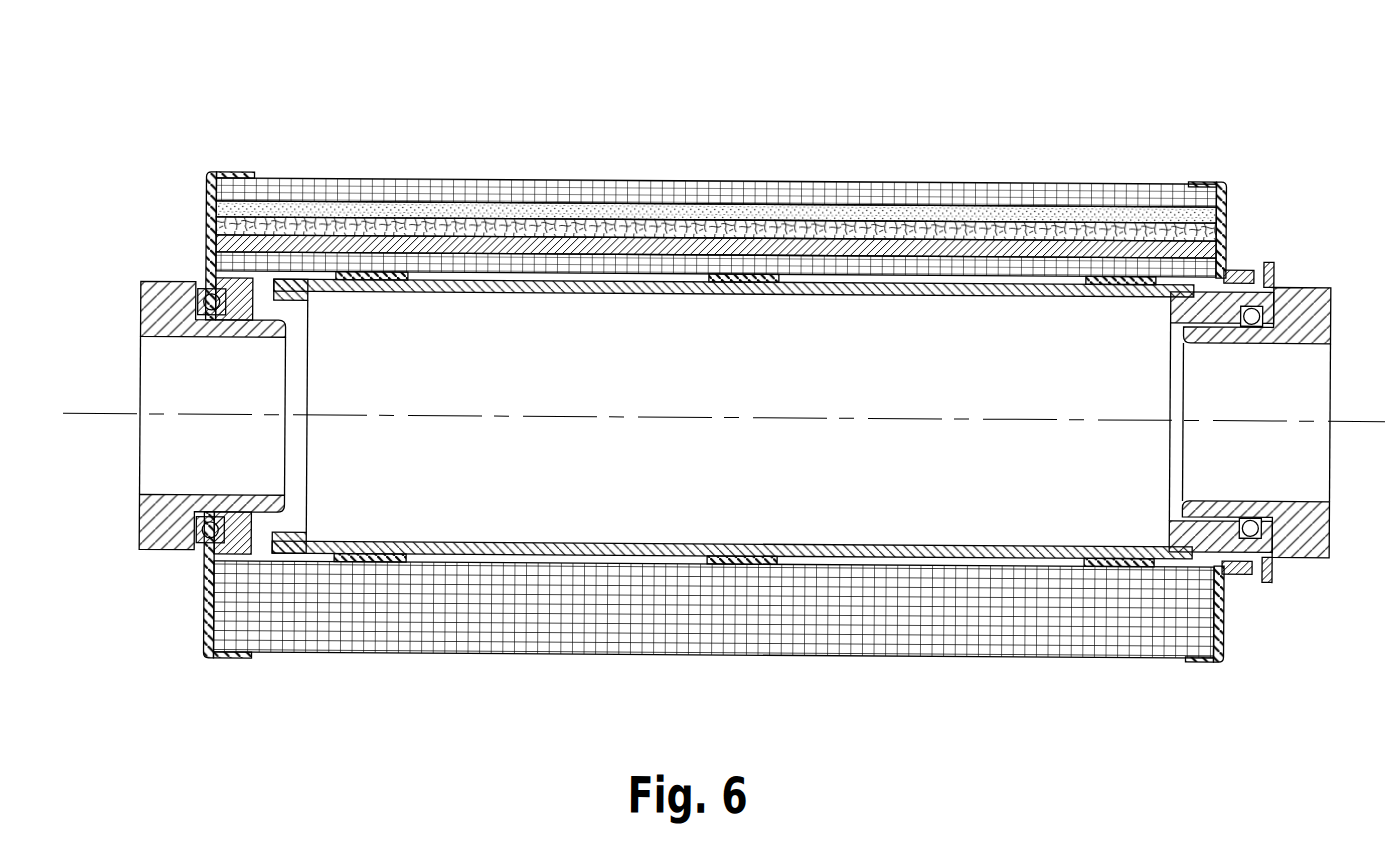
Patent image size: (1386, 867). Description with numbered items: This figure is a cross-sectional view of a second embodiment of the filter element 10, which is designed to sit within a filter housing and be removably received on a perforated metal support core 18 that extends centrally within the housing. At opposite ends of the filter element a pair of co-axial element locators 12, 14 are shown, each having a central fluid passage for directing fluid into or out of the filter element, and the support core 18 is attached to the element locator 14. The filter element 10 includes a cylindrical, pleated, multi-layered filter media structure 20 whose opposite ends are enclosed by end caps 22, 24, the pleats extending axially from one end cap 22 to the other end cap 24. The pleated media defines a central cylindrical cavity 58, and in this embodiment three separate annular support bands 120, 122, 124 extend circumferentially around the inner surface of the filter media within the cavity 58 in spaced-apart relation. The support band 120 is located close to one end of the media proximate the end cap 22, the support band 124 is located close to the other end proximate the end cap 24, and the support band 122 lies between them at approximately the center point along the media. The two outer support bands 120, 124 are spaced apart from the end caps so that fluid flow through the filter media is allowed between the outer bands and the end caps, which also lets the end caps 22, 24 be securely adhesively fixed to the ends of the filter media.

The filter element 10 is at (723, 375).
The element locator 12 is at (155, 286).
The element locator 14 is at (1303, 284).
The perforated metal support core 18 is at (879, 538).
The filter media structure 20 is at (449, 174).
The end cap 22 is at (205, 193).
The end cap 24 is at (1225, 198).
The cylindrical cavity 58 is at (577, 500).
The support band 120 is at (373, 274).
The support band 122 is at (742, 274).
The support band 124 is at (1112, 274).